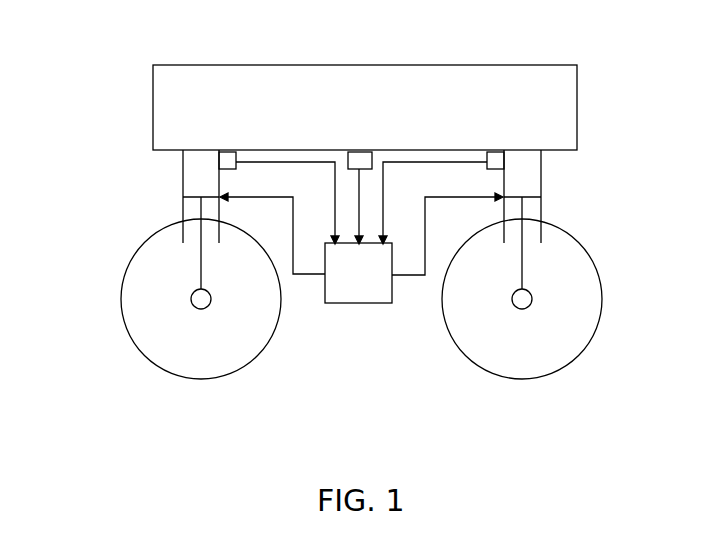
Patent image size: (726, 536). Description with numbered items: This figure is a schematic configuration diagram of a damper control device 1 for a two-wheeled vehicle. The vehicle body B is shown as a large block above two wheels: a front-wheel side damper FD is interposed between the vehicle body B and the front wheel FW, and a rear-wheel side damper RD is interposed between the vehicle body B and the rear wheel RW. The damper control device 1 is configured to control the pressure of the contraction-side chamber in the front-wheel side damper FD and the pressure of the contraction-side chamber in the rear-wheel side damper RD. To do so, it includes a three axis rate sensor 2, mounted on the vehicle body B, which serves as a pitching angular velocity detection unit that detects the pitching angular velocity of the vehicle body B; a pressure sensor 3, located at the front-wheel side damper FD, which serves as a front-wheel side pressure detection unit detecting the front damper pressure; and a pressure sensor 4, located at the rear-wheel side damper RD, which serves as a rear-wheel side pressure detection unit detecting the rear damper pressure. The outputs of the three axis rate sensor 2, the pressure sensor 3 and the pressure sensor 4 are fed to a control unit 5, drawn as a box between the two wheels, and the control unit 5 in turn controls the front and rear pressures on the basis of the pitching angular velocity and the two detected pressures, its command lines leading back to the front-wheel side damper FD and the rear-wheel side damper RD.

The damper control device 1 is at (322, 310).
The three axis rate sensor 2 is at (371, 152).
The pressure sensor 3 is at (229, 152).
The pressure sensor 4 is at (497, 152).
The control unit 5 is at (355, 303).
The vehicle body B is at (345, 65).
The front-wheel side damper FD is at (183, 190).
The front wheel FW is at (124, 277).
The rear-wheel side damper RD is at (542, 202).
The rear wheel RW is at (598, 270).